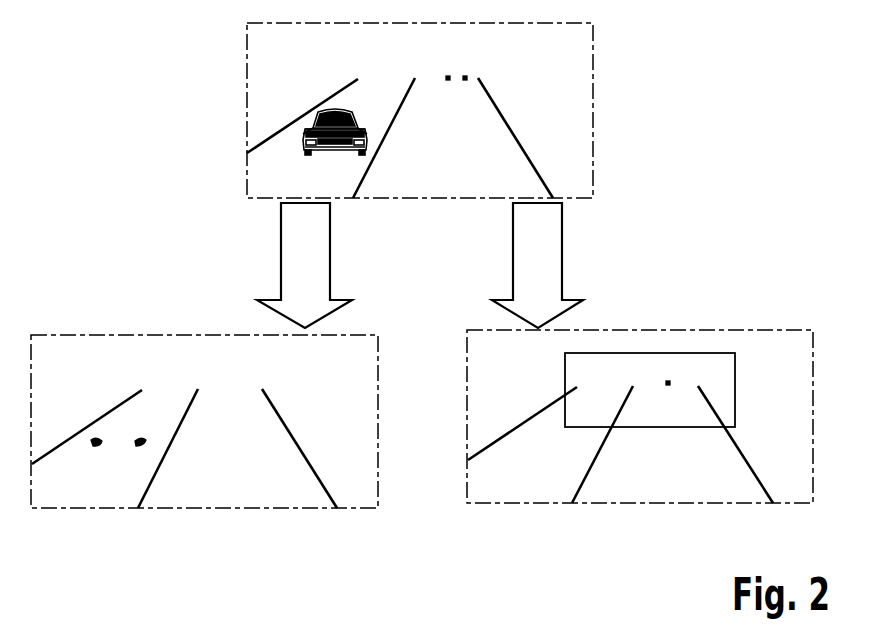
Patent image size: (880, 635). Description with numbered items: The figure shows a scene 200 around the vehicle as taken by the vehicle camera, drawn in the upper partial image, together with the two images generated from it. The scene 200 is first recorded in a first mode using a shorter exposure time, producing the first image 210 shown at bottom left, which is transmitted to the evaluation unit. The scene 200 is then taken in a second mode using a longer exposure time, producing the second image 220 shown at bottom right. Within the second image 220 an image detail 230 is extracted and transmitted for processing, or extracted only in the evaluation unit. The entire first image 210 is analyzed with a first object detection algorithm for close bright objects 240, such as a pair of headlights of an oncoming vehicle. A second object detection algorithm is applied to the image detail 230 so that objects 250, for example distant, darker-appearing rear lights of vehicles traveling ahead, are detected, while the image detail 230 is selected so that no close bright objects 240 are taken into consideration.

The scene 200 is at (593, 135).
The first image 210 is at (204, 469).
The second image 220 is at (640, 429).
The image detail 230 is at (627, 352).
The bright objects 240 is at (96, 446).
The objects 250 is at (687, 383).